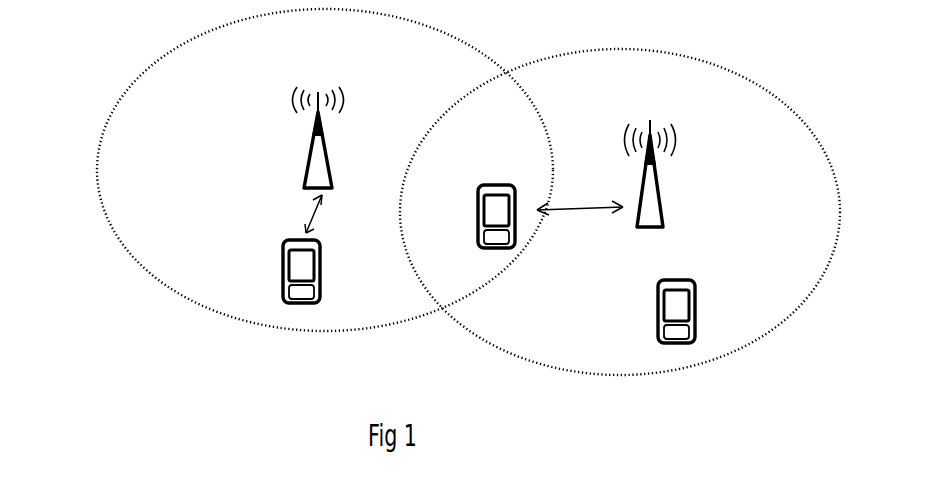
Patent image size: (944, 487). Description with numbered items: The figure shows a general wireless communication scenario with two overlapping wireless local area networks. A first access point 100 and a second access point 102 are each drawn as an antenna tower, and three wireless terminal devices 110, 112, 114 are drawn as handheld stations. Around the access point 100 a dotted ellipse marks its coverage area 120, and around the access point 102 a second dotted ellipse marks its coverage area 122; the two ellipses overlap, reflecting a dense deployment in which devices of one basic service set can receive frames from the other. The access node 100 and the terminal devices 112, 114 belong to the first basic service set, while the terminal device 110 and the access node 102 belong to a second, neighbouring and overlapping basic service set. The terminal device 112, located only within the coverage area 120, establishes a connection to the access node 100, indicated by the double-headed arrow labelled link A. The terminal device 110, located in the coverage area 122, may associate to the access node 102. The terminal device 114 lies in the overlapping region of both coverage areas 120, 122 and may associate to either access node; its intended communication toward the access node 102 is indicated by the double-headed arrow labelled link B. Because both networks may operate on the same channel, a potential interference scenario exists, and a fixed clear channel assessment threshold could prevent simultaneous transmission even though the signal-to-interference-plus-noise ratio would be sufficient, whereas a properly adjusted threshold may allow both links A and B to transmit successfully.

The access point 100 is at (322, 149).
The access point 102 is at (660, 196).
The wireless terminal device 110 is at (659, 286).
The wireless terminal device 112 is at (284, 244).
The wireless terminal device 114 is at (479, 189).
The coverage area 120 is at (119, 96).
The coverage area 122 is at (552, 63).
The link A is at (307, 214).
The link B is at (580, 200).